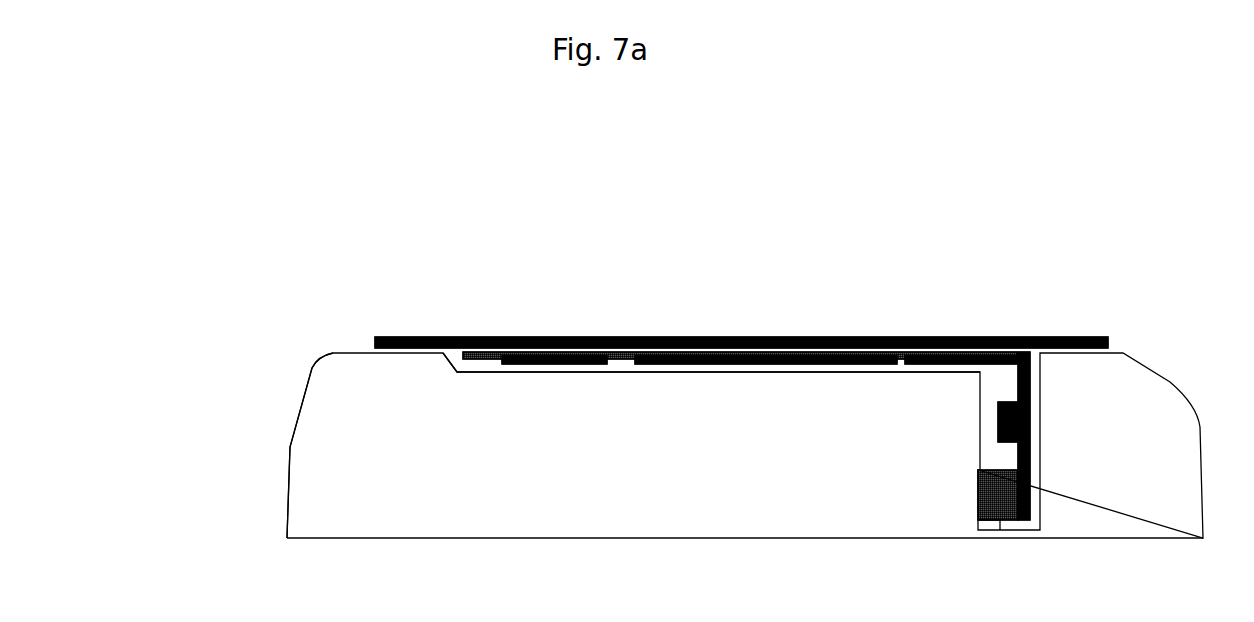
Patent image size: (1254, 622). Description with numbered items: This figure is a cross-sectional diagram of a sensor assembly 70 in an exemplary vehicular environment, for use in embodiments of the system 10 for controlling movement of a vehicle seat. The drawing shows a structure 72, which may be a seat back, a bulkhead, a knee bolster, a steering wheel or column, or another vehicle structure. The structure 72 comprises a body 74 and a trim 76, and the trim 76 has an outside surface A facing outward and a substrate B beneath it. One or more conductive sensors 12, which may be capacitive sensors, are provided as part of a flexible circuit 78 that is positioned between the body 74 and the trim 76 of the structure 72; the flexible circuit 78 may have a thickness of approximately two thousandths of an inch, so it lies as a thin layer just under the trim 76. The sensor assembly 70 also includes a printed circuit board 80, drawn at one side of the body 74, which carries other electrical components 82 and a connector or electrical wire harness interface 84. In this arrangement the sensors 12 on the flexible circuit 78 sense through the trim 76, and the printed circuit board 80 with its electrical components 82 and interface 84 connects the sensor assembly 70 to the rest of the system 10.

The sensor assembly 70 is at (569, 262).
The structure 72 is at (298, 344).
The body 74 is at (292, 463).
The trim 76 is at (955, 337).
The conductive sensors 12 is at (598, 346).
The flexible circuit 78 is at (480, 376).
The printed circuit board 80 is at (1040, 356).
The electrical components 82 is at (981, 434).
The connector or electrical wire harness interface 84 is at (989, 527).
The system 10 is at (1070, 617).
The outside surface A is at (1067, 326).
The substrate B is at (1125, 336).